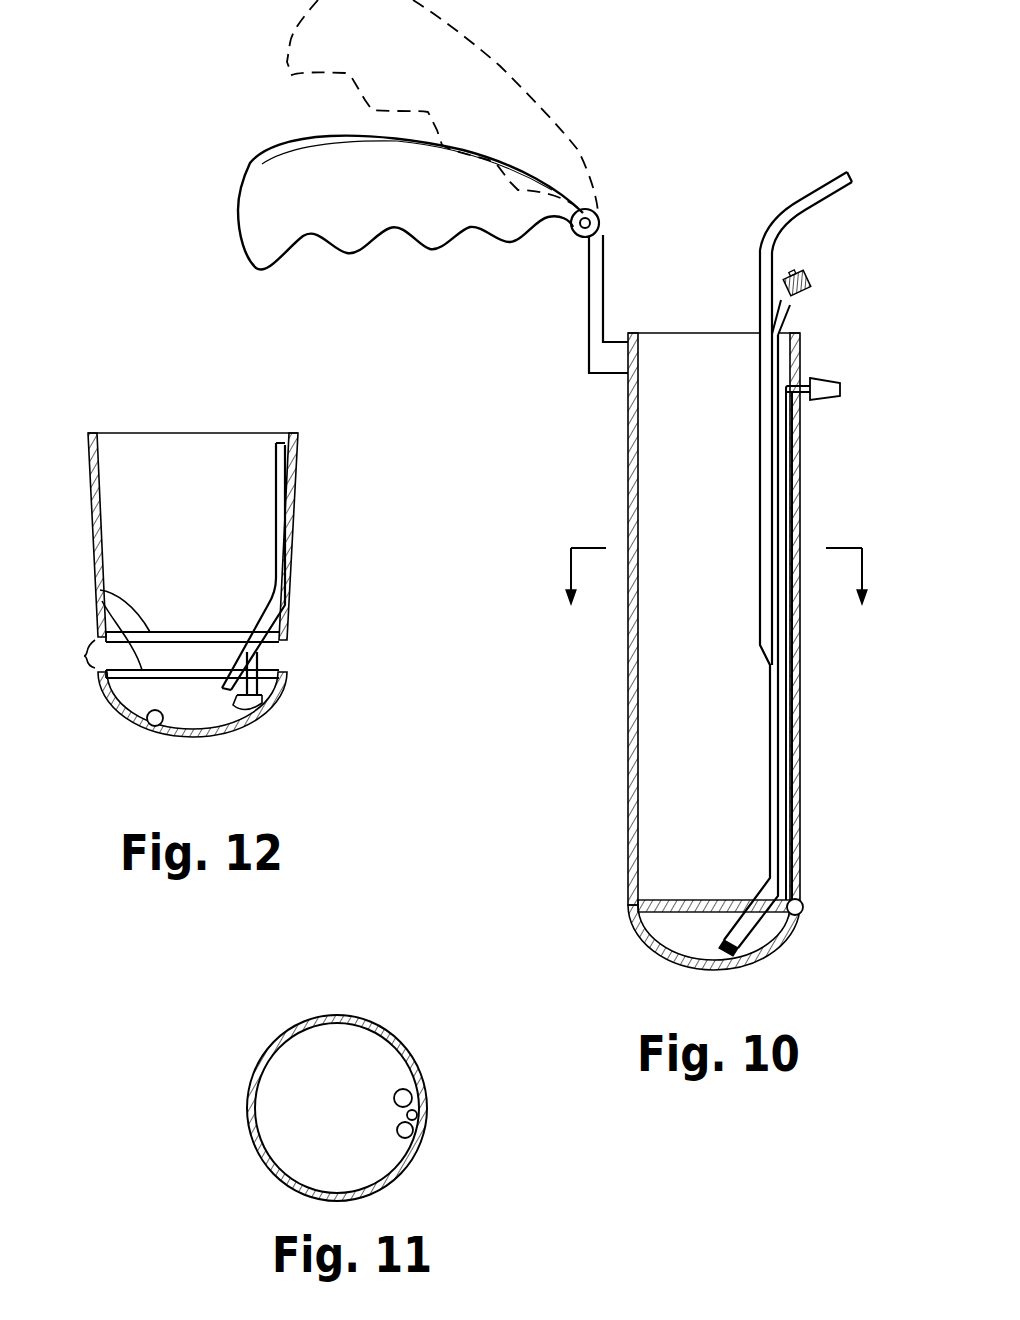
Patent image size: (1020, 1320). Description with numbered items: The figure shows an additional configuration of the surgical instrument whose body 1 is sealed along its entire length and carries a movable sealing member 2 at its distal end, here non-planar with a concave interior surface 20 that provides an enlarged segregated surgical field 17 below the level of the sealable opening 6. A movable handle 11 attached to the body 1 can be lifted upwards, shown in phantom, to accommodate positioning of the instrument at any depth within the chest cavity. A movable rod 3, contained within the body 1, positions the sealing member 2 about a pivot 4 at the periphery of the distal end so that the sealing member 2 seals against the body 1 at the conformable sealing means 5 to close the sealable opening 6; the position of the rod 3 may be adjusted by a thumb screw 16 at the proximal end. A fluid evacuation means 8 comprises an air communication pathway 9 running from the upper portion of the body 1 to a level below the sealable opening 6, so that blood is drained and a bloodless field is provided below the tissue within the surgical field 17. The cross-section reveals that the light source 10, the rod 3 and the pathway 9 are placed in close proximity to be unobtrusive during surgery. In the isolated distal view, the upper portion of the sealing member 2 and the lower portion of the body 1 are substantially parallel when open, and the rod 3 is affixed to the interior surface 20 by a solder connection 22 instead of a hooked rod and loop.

In FIG. 10, the body of the instrument 1 is at (633, 770).
In FIG. 12, the body of the instrument 1 is at (92, 540).
In FIG. 11, the body of the instrument 1 is at (272, 1160).
In FIG. 10, the sealing member 2 is at (665, 958).
In FIG. 12, the sealing member 2 is at (240, 722).
In FIG. 10, the movable rod 3 is at (760, 317).
In FIG. 12, the movable rod 3 is at (258, 659).
In FIG. 11, the movable rod 3 is at (415, 1118).
In FIG. 10, the pivot 4 is at (803, 904).
In FIG. 12, the conformable sealing means 5 is at (103, 602).
In FIG. 12, the sealable opening 6 is at (86, 655).
In FIG. 10, the fluid evacuation means 8 is at (838, 388).
In FIG. 10, the air communication pathway 9 is at (796, 452).
In FIG. 12, the air communication pathway 9 is at (287, 607).
In FIG. 11, the air communication pathway 9 is at (404, 1135).
In FIG. 10, the light source 10 is at (852, 177).
In FIG. 11, the light source 10 is at (407, 1098).
In FIG. 10, the movable handle 11 is at (463, 203).
In FIG. 10, the thumb screw 16 is at (818, 283).
In FIG. 10, the segregated surgical field 17 is at (667, 928).
In FIG. 12, the segregated surgical field 17 is at (147, 692).
In FIG. 10, the interior surface 20 is at (763, 950).
In FIG. 12, the interior surface 20 is at (143, 718).
In FIG. 12, the solder connection 22 is at (247, 706).